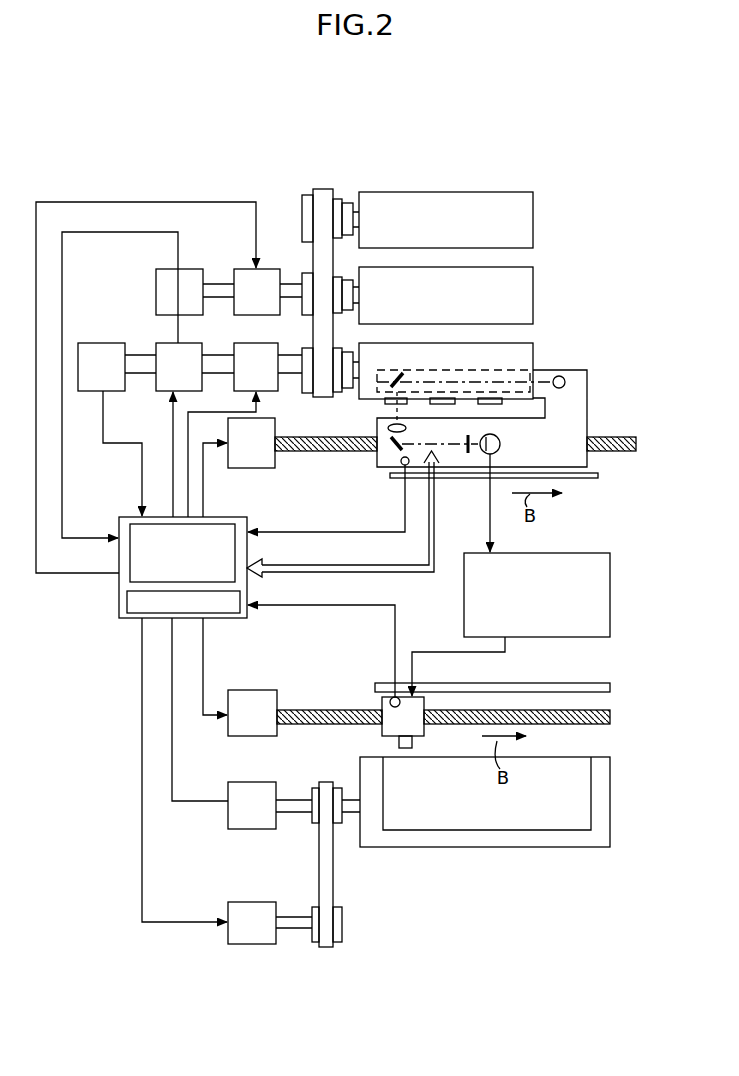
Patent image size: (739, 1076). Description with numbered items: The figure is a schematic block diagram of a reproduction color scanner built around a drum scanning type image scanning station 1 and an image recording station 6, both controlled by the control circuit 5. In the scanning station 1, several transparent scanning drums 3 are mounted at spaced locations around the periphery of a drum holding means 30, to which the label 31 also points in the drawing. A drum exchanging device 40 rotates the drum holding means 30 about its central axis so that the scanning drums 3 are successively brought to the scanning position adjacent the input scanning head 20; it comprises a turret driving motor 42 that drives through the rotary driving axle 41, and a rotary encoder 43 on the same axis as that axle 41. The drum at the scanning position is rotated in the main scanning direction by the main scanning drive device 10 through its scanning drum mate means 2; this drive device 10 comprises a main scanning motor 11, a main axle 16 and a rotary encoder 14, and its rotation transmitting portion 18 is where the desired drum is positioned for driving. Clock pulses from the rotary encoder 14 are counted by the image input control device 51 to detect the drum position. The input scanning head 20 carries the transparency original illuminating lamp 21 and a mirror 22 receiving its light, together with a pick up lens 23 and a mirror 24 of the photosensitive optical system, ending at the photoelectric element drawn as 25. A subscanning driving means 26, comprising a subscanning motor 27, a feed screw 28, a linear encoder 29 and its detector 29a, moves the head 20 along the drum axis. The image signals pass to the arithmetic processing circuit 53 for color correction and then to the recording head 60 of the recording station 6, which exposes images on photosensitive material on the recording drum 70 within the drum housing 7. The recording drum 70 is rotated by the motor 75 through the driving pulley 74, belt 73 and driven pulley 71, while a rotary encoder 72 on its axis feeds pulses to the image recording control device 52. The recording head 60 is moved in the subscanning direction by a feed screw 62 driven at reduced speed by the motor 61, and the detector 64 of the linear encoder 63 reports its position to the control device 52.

The drum scanning type image scanning station 1 is at (600, 340).
The scanning drum mate means 2 is at (309, 398).
The scanning drums 3 is at (533, 248).
The control circuit 5 is at (142, 603).
The image recording station 6 is at (630, 700).
The recording drum 7 is at (592, 805).
The main scanning drive device 10 is at (120, 426).
The main scanning motor 11 is at (165, 350).
The rotary encoder 14 is at (85, 354).
The main axle 16 is at (143, 353).
The rotation transmitting portion 18 is at (265, 352).
The input scanning head 20 is at (590, 411).
The transparency original illuminating lamp 21 is at (566, 382).
The mirror 22 is at (396, 379).
The pick up lens 23 is at (388, 428).
The mirror 24 is at (391, 447).
The photodetector 25 is at (502, 442).
The subscanning driving means 26 is at (237, 460).
The subscanning motor 27 is at (251, 443).
The feed screw 28 is at (243, 468).
The linear encoder 29 is at (588, 480).
The detector 29a is at (403, 466).
The drum holding means 30 is at (333, 188).
The coupling 31 is at (302, 193).
The drum exchanging device 40 is at (271, 242).
The rotary driving axle 41 is at (222, 283).
The turret driving motor 42 is at (243, 277).
The rotary encoder 43 is at (185, 280).
The image input control device 51 is at (182, 553).
The image recording control device 52 is at (222, 562).
The arithmetic processing circuit 53 is at (612, 583).
The recording head 60 is at (403, 722).
The motor 61 is at (247, 690).
The feed screw 62 is at (600, 725).
The linear encoder 63 is at (600, 683).
The detector 64 is at (390, 701).
The recording drum 70 is at (478, 848).
The driven pulley 71 is at (341, 789).
The rotary encoder 72 is at (222, 831).
The belt 73 is at (337, 873).
The driving pulley 74 is at (345, 922).
The motor 75 is at (256, 949).